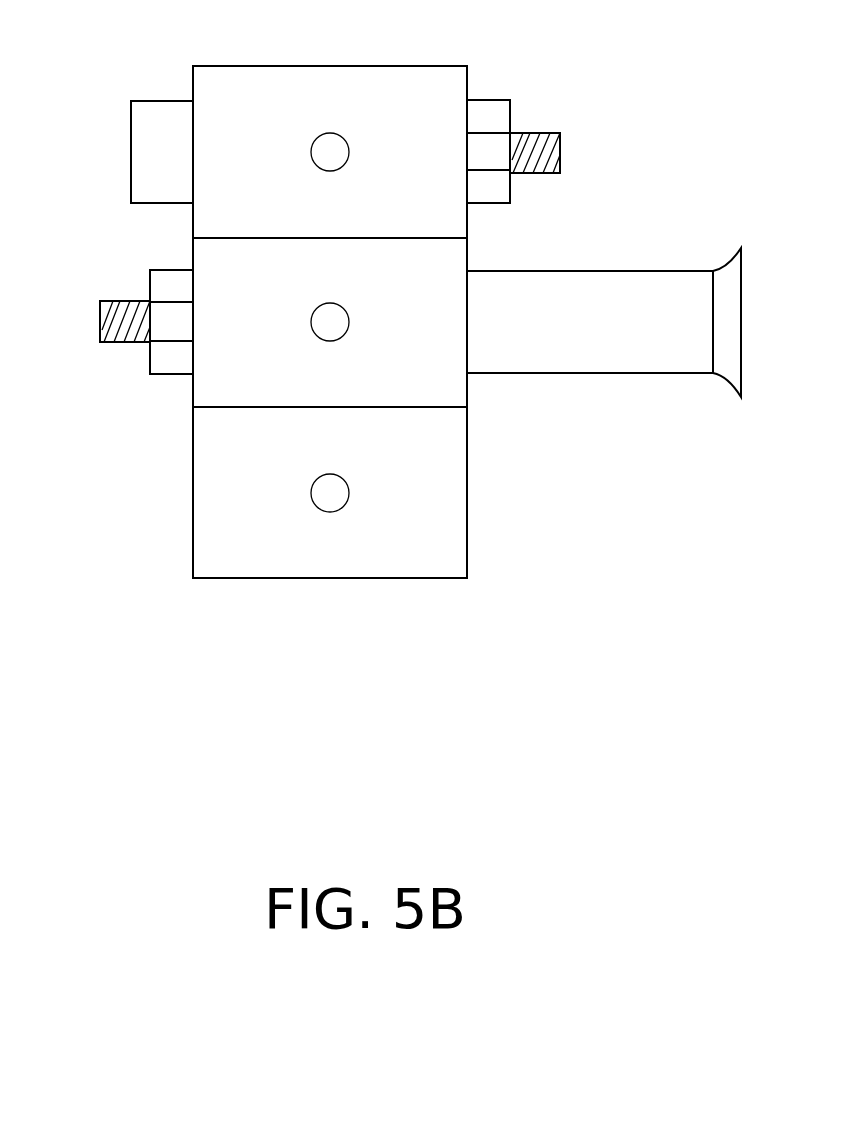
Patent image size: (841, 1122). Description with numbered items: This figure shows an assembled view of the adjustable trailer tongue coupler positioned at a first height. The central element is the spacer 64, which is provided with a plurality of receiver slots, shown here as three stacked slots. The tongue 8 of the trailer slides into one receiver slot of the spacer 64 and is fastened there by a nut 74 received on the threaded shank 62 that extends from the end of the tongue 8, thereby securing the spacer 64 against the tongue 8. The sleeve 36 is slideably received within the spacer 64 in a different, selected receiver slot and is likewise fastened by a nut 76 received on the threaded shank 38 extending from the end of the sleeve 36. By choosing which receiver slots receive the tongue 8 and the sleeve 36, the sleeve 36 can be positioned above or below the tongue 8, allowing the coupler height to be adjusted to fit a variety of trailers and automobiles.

The tongue 8 is at (158, 126).
The spacer 64 is at (345, 90).
The nut 74 is at (488, 118).
The threaded shank 62 is at (560, 148).
The nut 76 is at (171, 356).
The threaded shank 38 is at (98, 322).
The sleeve 36 is at (590, 347).